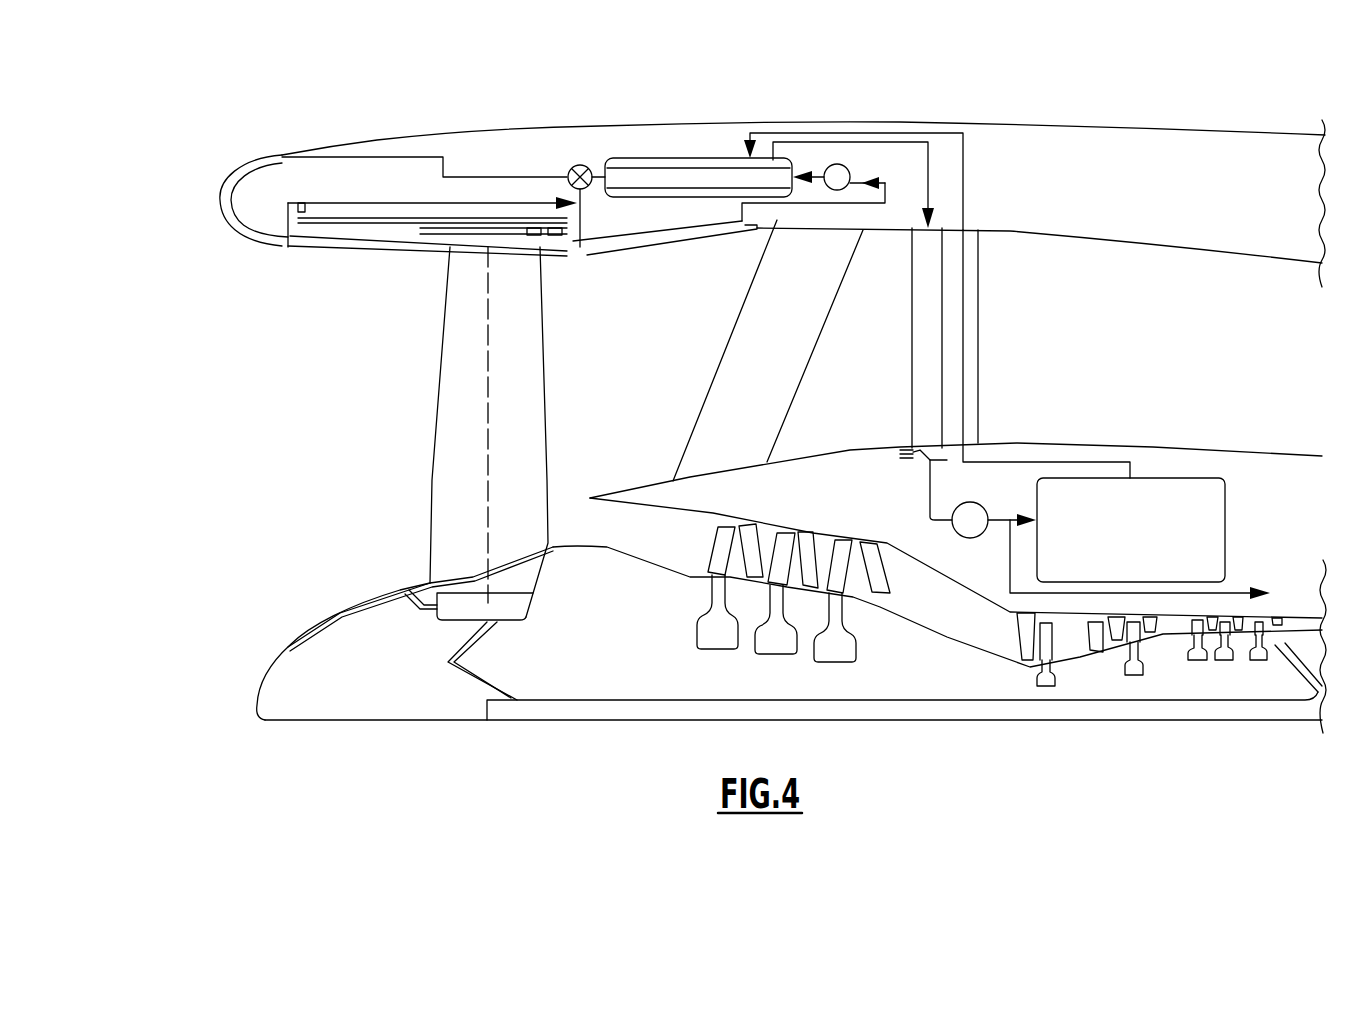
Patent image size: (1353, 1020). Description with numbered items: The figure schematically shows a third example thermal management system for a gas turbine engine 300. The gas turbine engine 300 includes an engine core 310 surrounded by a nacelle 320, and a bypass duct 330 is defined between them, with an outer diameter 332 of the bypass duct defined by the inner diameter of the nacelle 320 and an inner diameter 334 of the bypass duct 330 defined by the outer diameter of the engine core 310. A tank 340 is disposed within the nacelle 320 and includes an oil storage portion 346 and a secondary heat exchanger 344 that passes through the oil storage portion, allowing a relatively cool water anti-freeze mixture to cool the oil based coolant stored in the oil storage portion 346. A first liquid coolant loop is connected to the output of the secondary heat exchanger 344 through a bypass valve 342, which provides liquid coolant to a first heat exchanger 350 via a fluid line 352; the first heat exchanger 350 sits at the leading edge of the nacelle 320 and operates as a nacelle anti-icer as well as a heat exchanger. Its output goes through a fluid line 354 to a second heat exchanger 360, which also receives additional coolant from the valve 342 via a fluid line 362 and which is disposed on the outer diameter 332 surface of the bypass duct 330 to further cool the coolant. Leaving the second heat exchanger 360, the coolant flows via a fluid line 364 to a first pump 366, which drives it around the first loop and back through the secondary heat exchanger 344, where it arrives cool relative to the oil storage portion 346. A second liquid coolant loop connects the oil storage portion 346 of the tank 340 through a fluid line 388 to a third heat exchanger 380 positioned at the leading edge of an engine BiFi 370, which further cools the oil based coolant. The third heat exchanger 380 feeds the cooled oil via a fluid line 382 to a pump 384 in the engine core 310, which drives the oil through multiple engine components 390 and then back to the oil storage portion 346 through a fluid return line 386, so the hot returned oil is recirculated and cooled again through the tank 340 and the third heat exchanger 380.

The gas turbine engine 300 is at (170, 348).
The engine core 310 is at (573, 700).
The nacelle 320 is at (987, 143).
The bypass duct 330 is at (1169, 349).
The outer diameter of the bypass duct 332 is at (1187, 253).
The inner diameter of the bypass duct 334 is at (1170, 447).
The tank 340 is at (662, 158).
The bypass valve 342 is at (578, 165).
The secondary heat exchanger 344 is at (717, 160).
The oil storage portion 346 is at (700, 167).
The first heat exchanger 350 is at (228, 180).
The fluid line 352 is at (408, 157).
The fluid line 354 is at (347, 247).
The second heat exchanger 360 is at (575, 240).
The fluid line 362 is at (567, 177).
The fluid line 364 is at (767, 223).
The first pump 366 is at (827, 165).
The engine BiFi 370 is at (983, 330).
The third heat exchanger 380 is at (918, 393).
The fluid line 382 is at (925, 488).
The pump 384 is at (965, 540).
The fluid return line 386 is at (963, 187).
The fluid line 388 is at (885, 140).
The engine components 390 is at (1226, 522).